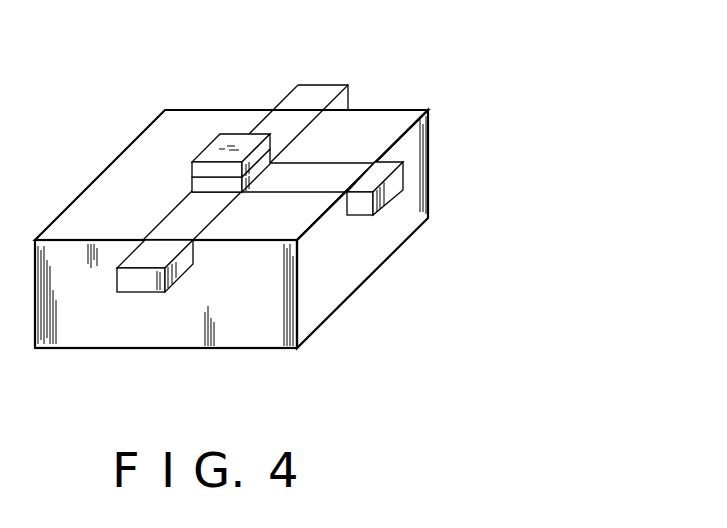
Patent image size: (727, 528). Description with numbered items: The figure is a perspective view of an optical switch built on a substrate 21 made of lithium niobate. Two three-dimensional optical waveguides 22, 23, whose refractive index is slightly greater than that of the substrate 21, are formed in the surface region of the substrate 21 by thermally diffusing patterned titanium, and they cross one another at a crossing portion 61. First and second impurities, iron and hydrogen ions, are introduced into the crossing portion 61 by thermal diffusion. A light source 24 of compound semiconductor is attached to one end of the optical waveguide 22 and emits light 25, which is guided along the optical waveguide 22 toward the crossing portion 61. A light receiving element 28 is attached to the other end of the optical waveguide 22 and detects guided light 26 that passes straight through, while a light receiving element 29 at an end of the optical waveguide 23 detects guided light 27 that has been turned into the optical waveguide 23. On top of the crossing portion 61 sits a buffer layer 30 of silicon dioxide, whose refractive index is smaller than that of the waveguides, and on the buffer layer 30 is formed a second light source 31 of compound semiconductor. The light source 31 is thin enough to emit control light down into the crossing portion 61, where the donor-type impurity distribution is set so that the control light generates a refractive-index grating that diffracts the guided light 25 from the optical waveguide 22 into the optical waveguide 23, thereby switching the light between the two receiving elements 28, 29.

The substrate 21 is at (62, 341).
The optical waveguide 22 is at (198, 232).
The optical waveguide 23 is at (338, 161).
The light source 24 is at (140, 288).
The light 25 is at (212, 196).
The guided light 26 is at (292, 112).
The guided light 27 is at (344, 175).
The light receiving element 28 is at (320, 88).
The light receiving element 29 is at (390, 194).
The buffer layer 30 is at (192, 185).
The light source 31 is at (203, 151).
The crossing portion 61 is at (247, 197).